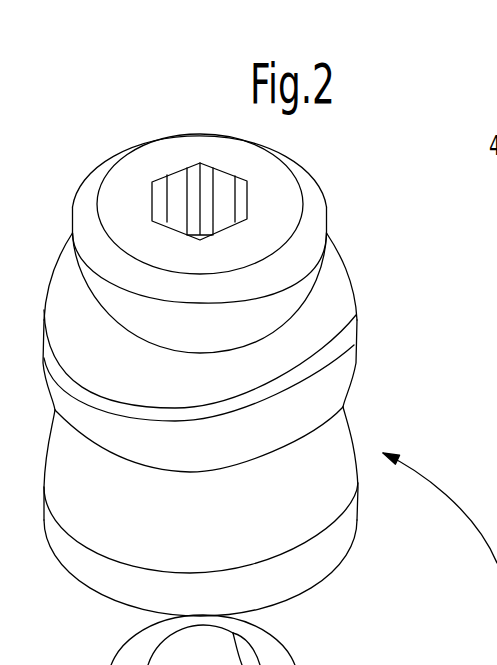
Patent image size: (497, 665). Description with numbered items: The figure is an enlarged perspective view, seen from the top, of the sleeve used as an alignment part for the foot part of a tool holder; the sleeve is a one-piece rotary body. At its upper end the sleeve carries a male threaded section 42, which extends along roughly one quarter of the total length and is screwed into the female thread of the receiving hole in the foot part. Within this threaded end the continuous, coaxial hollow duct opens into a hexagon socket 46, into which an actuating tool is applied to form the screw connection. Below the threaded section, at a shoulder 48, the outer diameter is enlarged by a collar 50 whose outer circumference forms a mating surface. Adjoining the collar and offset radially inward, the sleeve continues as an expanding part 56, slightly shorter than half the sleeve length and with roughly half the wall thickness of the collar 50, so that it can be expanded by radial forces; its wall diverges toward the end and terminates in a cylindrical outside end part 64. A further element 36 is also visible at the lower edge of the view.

The ring 36 is at (157, 640).
The male threaded section 42 is at (307, 277).
The hexagon socket 46 is at (170, 192).
The shoulder 48 is at (317, 317).
The collar 50 is at (317, 402).
The expanding part 56 is at (305, 496).
The cylindrical outside end part 64 is at (316, 556).